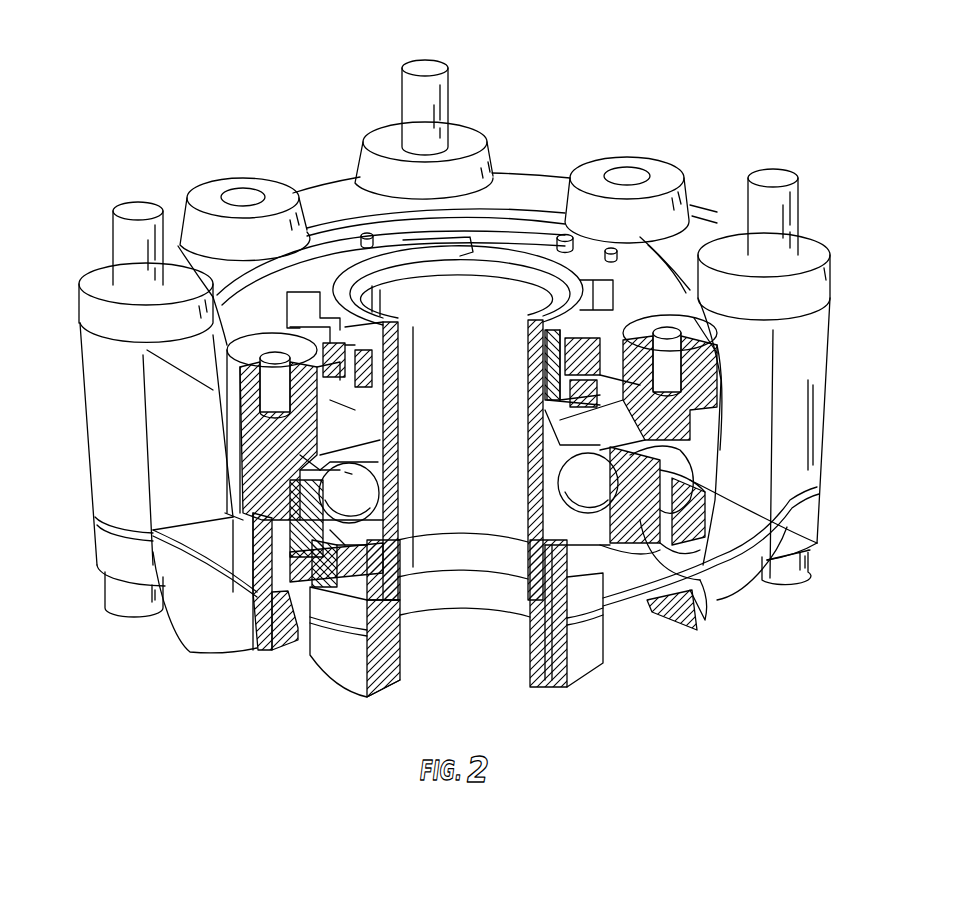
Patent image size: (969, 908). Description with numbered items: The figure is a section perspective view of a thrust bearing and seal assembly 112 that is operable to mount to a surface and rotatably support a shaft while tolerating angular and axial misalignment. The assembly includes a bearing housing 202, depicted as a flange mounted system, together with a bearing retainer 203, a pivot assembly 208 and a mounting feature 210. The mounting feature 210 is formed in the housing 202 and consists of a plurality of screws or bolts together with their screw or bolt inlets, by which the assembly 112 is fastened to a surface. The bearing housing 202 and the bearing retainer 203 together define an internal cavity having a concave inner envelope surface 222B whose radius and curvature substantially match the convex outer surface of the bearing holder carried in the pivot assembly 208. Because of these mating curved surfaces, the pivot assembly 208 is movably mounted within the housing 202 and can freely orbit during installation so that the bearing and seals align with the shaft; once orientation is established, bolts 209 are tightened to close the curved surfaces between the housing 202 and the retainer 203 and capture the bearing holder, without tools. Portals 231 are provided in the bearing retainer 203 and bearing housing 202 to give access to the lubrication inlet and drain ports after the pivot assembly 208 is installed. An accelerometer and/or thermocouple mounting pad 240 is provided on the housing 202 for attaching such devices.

The bearing and seal assembly 112 is at (694, 100).
The bearing housing 202 is at (76, 353).
The bearing retainer 203 is at (815, 517).
The pivot assembly 208 is at (497, 292).
The bolts 209 is at (125, 615).
The mounting feature 210 is at (467, 130).
The concave inner envelope surface 222B is at (233, 515).
The portals 231 is at (770, 530).
The accelerometer and/or thermocouple mounting pad 240 is at (238, 533).